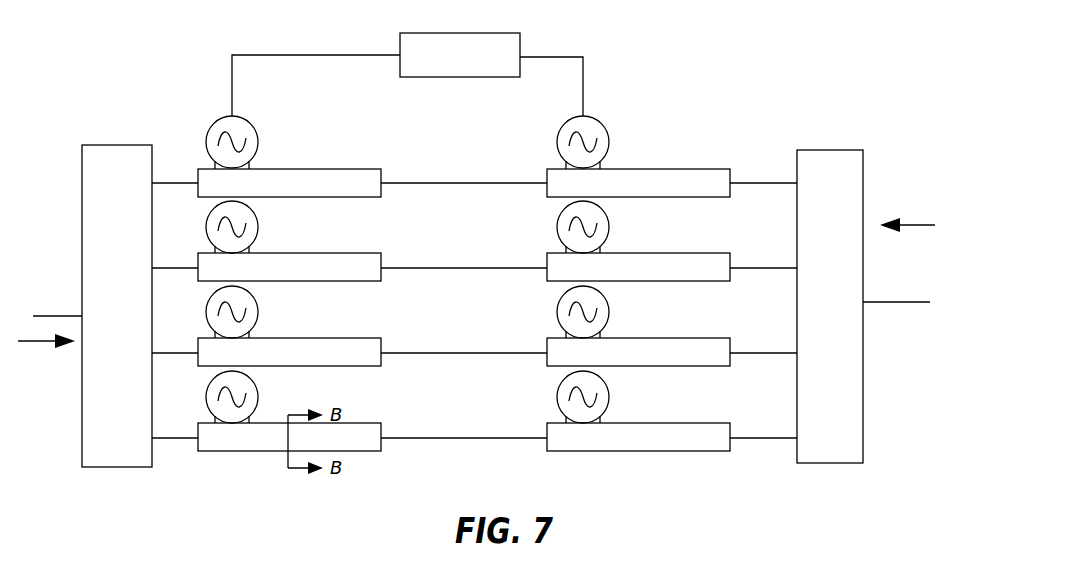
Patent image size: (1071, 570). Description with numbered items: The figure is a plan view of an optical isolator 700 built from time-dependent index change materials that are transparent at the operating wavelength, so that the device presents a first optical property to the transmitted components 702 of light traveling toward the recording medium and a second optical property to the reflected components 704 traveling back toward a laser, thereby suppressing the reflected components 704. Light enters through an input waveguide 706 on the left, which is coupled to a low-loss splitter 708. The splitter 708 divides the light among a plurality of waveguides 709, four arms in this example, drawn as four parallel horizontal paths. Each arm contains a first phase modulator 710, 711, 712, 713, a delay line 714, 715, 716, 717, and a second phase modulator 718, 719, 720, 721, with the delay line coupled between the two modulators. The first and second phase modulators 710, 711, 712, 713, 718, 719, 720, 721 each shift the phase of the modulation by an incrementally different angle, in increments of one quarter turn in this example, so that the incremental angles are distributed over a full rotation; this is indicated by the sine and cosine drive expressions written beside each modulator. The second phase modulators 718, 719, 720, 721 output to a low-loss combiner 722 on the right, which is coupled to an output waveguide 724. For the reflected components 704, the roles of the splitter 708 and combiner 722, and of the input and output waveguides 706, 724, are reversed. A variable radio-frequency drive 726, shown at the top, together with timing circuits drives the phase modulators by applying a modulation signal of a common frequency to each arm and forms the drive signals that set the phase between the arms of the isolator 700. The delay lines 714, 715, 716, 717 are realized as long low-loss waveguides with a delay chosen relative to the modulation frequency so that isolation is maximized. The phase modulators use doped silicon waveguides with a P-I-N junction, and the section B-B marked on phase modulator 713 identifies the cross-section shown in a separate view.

The optical isolator 700 is at (887, 52).
The transmitted components of light 702 is at (36, 343).
The reflected components of light 704 is at (915, 223).
The input waveguide 706 is at (55, 315).
The low-loss splitter 708 is at (118, 145).
The plurality of waveguides 709 is at (680, 86).
The first phase modulator 710 is at (378, 169).
The first phase modulator 711 is at (371, 253).
The first phase modulator 712 is at (371, 338).
The first phase modulator 713 is at (371, 423).
The delay line 714 is at (464, 184).
The delay line 715 is at (460, 269).
The delay line 716 is at (460, 354).
The delay line 717 is at (465, 440).
The second phase modulator 718 is at (552, 166).
The second phase modulator 719 is at (550, 253).
The second phase modulator 720 is at (550, 338).
The second phase modulator 721 is at (550, 423).
The low-loss combiner 722 is at (822, 150).
The output waveguide 724 is at (901, 302).
The variable radio-frequency (RF) drive 726 is at (463, 77).